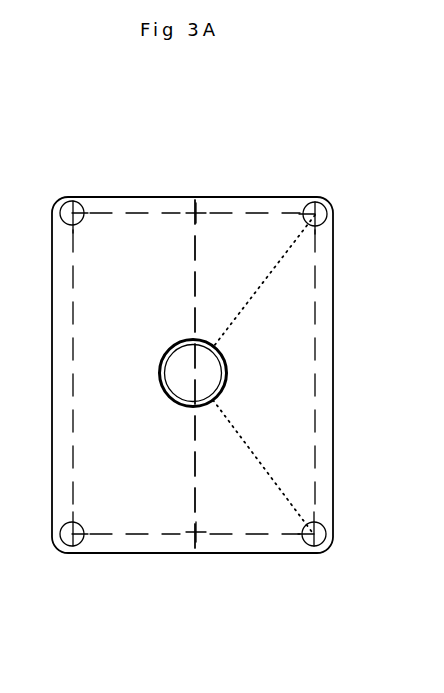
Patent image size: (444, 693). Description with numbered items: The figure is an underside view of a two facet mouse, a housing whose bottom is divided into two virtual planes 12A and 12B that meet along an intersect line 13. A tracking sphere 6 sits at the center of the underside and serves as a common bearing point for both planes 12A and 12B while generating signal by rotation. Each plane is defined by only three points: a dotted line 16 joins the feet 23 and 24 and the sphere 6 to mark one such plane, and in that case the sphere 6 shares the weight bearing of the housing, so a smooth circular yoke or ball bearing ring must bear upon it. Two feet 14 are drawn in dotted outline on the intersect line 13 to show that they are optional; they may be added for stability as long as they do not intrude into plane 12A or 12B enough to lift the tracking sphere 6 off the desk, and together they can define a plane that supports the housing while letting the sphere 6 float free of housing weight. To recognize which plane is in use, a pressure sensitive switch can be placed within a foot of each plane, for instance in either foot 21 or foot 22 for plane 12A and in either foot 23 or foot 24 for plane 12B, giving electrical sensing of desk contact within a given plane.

The sphere 6 is at (207, 375).
The virtual plane 12A is at (108, 298).
The virtual plane 12B is at (262, 302).
The intersect line 13 is at (192, 325).
The feet 14 is at (196, 208).
The dotted line 16 is at (254, 459).
The foot 21 is at (66, 208).
The foot 22 is at (65, 545).
The foot 23 is at (328, 210).
The foot 24 is at (315, 555).